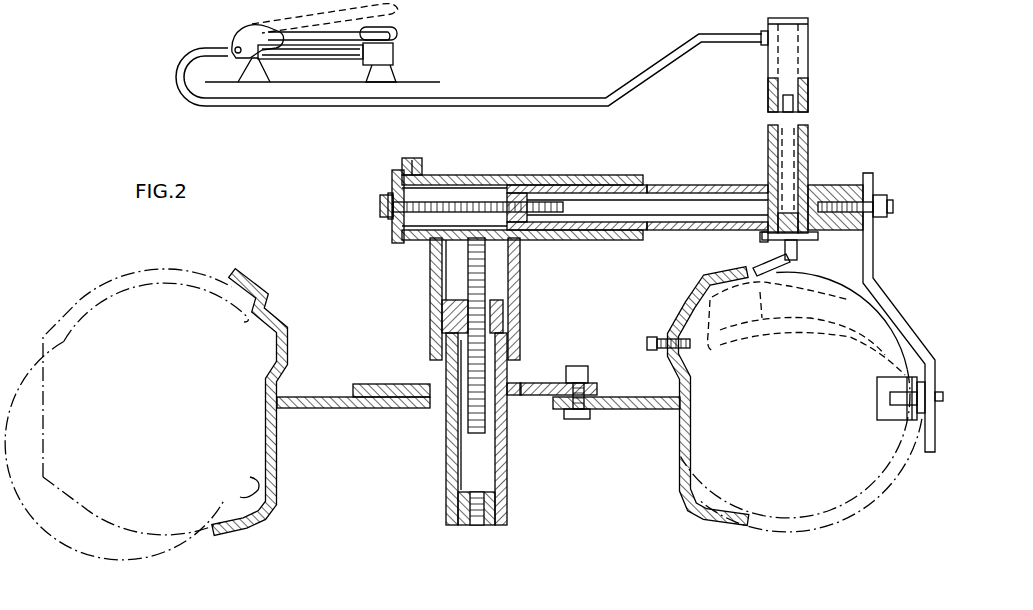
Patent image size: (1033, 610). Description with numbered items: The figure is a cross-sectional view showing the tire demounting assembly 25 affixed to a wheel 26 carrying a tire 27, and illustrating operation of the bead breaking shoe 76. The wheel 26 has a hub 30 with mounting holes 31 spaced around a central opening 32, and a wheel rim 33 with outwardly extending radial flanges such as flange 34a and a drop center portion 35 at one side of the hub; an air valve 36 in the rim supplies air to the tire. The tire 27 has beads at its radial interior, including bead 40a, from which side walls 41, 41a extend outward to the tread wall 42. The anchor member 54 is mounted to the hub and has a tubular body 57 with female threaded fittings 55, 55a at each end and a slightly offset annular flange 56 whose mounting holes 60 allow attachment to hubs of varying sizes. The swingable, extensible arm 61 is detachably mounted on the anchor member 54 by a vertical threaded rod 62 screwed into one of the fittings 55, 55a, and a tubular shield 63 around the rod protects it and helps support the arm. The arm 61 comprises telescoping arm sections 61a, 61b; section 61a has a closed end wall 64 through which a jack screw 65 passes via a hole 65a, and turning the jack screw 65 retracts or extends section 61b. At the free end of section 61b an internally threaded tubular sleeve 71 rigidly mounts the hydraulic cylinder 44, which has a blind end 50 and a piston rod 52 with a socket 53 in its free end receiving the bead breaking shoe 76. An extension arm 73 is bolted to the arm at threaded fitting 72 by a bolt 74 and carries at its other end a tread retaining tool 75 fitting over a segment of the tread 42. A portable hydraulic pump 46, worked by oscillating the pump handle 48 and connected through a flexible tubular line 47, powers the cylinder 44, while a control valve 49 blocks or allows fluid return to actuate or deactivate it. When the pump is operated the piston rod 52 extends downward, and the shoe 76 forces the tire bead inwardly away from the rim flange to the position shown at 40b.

The tire demounting assembly 25 is at (468, 174).
The wheel 26 is at (330, 410).
The tire 27 is at (68, 300).
The hub 30 is at (662, 412).
The mounting holes 31 is at (560, 412).
The central opening 32 is at (411, 409).
The wheel rim 33 is at (678, 470).
The radial flange 34a is at (745, 528).
The drop center portion 35 is at (286, 332).
The air valve 36 is at (646, 342).
The tire bead 40a is at (250, 478).
The bead position 40b is at (732, 330).
The side wall 41 is at (178, 270).
The side wall 41a is at (176, 538).
The tread wall 42 is at (43, 480).
The hydraulic cylinder 44 is at (809, 56).
The portable hydraulic pump 46 is at (400, 50).
The flexible tubular line 47 is at (570, 97).
The pump handle 48 is at (400, 25).
The control valve 49 is at (272, 66).
The blind end 50 is at (800, 18).
The piston rod 52 is at (752, 236).
The socket 53 is at (800, 256).
The anchor member 54 is at (508, 448).
The female threaded fitting 55 is at (446, 320).
The female threaded fitting 55a is at (470, 526).
The annular flange 56 is at (534, 382).
The tubular body 57 is at (446, 462).
The mounting holes 60 is at (582, 372).
The arm 61 is at (518, 175).
The arm section 61a is at (606, 184).
The arm section 61b is at (708, 184).
The threaded rod 62 is at (487, 276).
The shield 63 is at (522, 262).
The closed end wall 64 is at (392, 180).
The jack screw 65 is at (380, 206).
The hole 65a is at (392, 216).
The internally threaded tubular sleeve 71 is at (812, 185).
The threaded fitting 72 is at (850, 185).
The extension arm 73 is at (876, 262).
The bolt 74 is at (893, 206).
The tread retaining tool 75 is at (920, 424).
The bead breaking shoe 76 is at (758, 258).